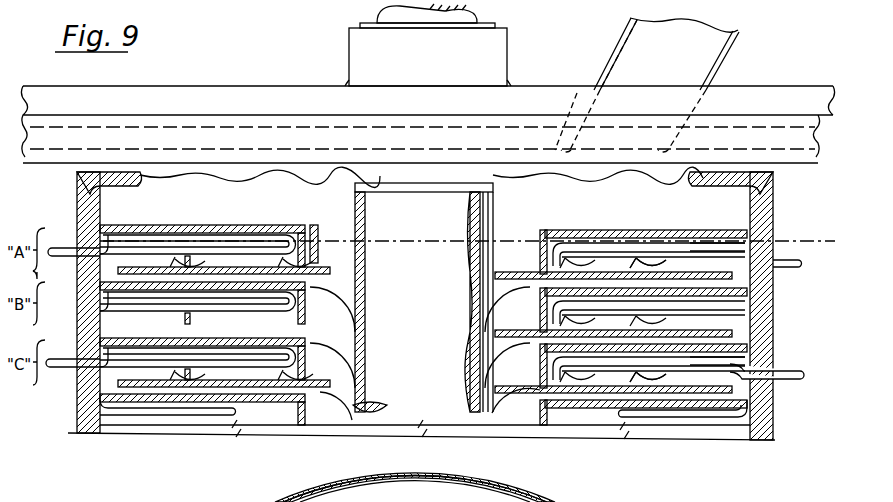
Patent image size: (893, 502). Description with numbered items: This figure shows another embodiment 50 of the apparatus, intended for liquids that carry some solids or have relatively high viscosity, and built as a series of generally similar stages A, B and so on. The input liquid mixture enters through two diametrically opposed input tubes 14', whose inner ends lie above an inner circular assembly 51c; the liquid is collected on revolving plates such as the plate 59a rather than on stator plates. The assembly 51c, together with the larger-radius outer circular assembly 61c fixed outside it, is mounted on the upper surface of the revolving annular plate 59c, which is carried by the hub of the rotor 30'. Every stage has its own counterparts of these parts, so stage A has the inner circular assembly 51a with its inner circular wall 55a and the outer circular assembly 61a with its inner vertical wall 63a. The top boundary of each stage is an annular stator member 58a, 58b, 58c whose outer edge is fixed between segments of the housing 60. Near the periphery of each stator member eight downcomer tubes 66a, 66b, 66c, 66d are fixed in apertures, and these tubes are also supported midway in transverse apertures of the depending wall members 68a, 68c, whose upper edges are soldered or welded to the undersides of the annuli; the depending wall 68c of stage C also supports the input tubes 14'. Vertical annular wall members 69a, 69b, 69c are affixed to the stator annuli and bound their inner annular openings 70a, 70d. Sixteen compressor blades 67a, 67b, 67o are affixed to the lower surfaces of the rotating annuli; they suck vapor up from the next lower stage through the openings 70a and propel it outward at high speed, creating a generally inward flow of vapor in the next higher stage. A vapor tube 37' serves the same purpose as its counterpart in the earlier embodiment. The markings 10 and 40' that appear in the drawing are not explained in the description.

The vapor tube 37' is at (661, 85).
The section line indicator 10 is at (65, 237).
The housing 60 is at (100, 213).
The inner annular opening 70a is at (337, 228).
The inner circular wall 55a is at (473, 268).
The annular stator member 58a is at (203, 225).
The annular stator member 58b is at (355, 282).
The annular stator member 58c is at (340, 340).
The revolving plate 59a is at (155, 268).
The revolving annular plate 59c is at (340, 380).
The vertical annular wall member 69a is at (313, 226).
The vertical annular wall member 69b is at (330, 300).
The vertical annular wall member 69c is at (322, 355).
The terminal pin 40' is at (425, 273).
The input tube 14' is at (432, 379).
The downcomer tube 66a is at (615, 245).
The downcomer tube 66b is at (745, 296).
The downcomer tube 66c is at (737, 355).
The downcomer tube 66d is at (165, 412).
The inner circular assembly 51a is at (577, 262).
The inner circular assembly 51c is at (585, 385).
The inner vertical wall 63a is at (637, 262).
The outer depending wall member 68a is at (663, 258).
The outer depending wall member 68c is at (640, 368).
The outer circular assembly 61a is at (680, 262).
The outer circular assembly 61c is at (700, 385).
The rotor 30' is at (542, 201).
The compressor blade 67a is at (503, 293).
The compressor blade 67b is at (505, 348).
The compressor blade 67o is at (508, 395).
The inner annular opening 70d is at (527, 412).
The embodiment 50 is at (98, 440).